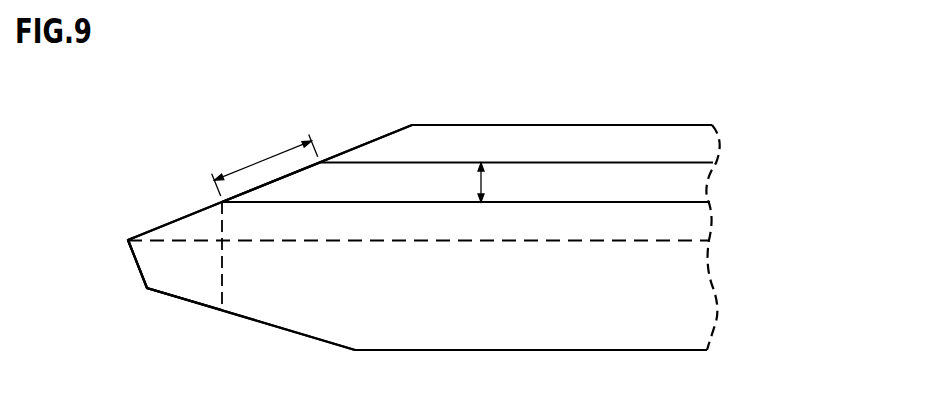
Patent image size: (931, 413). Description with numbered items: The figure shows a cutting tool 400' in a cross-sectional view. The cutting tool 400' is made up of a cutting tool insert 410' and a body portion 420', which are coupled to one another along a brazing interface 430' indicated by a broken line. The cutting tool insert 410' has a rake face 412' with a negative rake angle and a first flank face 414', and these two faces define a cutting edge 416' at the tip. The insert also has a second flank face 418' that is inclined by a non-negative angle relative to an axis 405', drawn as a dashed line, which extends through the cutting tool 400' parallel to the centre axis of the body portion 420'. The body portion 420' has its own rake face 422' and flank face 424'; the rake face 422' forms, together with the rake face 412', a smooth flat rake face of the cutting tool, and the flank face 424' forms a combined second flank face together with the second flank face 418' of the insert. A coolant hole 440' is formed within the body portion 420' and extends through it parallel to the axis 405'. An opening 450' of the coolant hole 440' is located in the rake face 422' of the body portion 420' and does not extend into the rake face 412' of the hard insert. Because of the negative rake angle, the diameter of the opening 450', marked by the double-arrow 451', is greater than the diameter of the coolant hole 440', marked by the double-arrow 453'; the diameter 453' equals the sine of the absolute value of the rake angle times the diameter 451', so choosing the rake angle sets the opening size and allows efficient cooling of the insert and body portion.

The cutting tool 400' is at (379, 235).
The axis 405' is at (419, 273).
The cutting tool insert 410' is at (175, 275).
The rake face 412' is at (175, 202).
The first flank face 414' is at (107, 270).
The cutting edge 416' is at (86, 237).
The second flank face 418' is at (185, 328).
The body portion 420' is at (531, 321).
The rake face 422' is at (317, 138).
The flank face 424' is at (288, 353).
The brazing interface 430' is at (260, 256).
The coolant hole 440' is at (467, 183).
The opening 450' is at (243, 158).
The diameter of the opening 451' is at (265, 155).
The diameter of the coolant hole 453' is at (512, 182).